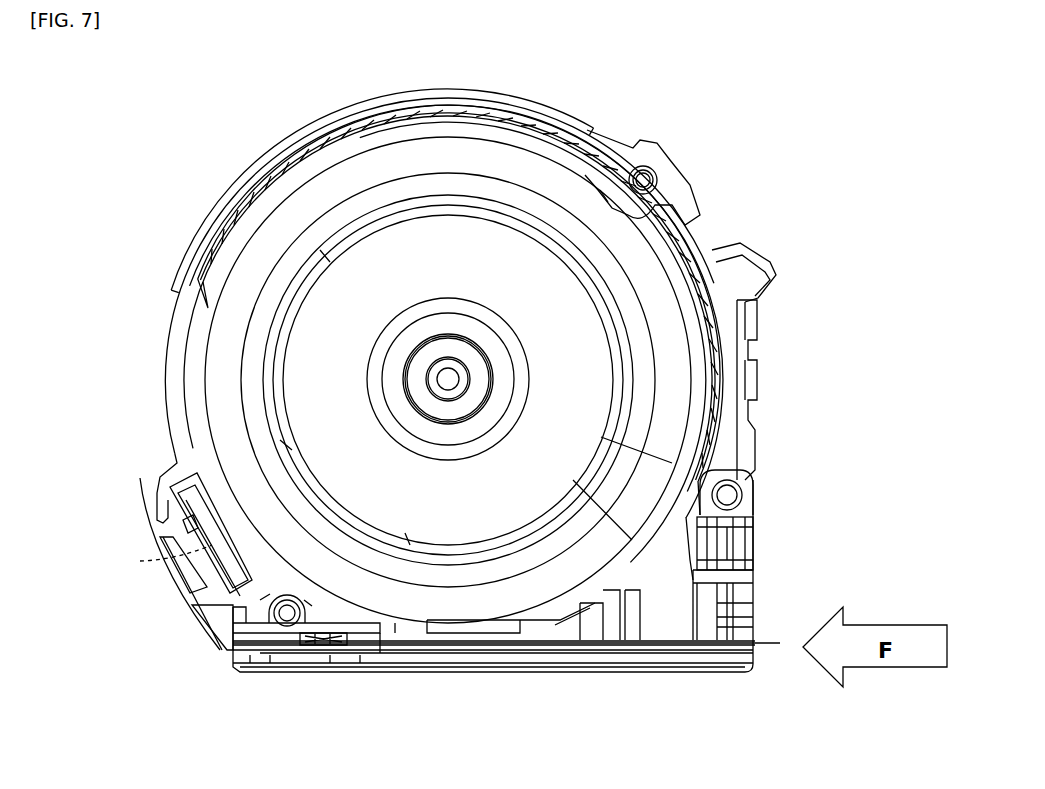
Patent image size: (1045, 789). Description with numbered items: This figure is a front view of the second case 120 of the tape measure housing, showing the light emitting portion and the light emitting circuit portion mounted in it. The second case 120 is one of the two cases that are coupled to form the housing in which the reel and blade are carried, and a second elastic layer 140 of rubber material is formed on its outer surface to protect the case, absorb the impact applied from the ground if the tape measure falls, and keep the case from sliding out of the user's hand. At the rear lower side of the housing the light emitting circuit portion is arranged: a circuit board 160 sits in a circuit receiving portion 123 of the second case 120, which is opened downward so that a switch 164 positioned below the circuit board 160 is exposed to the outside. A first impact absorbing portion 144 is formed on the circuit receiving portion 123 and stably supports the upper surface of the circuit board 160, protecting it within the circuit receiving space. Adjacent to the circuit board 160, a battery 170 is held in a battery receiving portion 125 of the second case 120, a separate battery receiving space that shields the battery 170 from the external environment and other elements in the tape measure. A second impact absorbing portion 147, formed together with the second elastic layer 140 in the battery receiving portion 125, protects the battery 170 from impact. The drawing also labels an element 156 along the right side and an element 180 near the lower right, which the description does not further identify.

The second elastic layer 140 is at (280, 135).
The second case 120 is at (527, 180).
The second impact absorbing portion 147 is at (172, 488).
The battery 170 is at (145, 562).
The battery receiving portion 125 is at (205, 577).
The first impact absorbing portion 144 is at (247, 662).
The circuit receiving portion 123 is at (313, 624).
The circuit board 160 is at (313, 650).
The switch 164 is at (357, 670).
The guide rail 156 is at (720, 443).
The latch assembly 180 is at (757, 537).